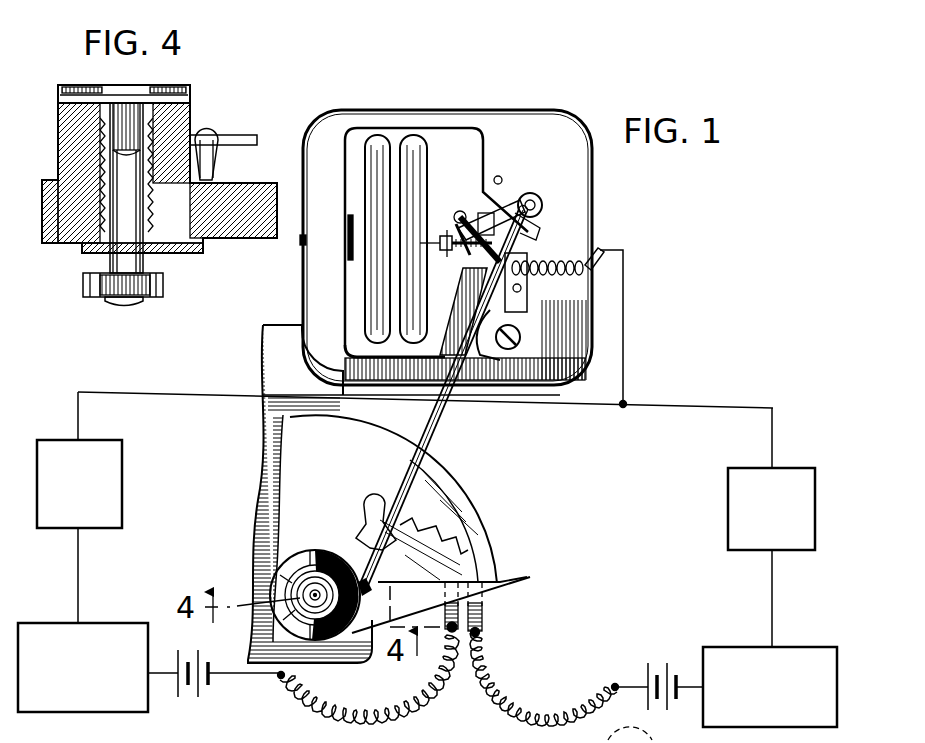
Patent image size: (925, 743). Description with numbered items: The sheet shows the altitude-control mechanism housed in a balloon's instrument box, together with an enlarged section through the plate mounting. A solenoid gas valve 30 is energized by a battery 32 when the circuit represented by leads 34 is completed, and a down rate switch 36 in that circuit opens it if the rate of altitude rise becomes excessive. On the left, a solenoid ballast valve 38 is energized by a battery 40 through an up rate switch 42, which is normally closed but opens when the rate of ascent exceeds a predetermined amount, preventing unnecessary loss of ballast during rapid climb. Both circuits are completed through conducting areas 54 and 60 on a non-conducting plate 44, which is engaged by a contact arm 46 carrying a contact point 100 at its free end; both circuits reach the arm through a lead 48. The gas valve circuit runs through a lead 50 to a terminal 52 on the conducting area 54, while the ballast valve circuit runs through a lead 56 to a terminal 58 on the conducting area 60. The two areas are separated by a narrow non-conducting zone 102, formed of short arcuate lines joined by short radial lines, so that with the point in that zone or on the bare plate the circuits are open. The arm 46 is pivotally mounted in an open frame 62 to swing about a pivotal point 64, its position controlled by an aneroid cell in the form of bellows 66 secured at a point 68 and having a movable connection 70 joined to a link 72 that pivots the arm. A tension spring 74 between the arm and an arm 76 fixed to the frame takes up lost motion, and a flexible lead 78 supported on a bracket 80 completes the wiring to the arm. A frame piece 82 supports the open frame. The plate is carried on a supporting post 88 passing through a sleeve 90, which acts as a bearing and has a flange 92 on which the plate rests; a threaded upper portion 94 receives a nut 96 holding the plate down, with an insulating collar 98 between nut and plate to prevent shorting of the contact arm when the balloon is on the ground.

In FIG. 1, the solenoid gas valve 30 is at (730, 646).
In FIG. 1, the battery 32 is at (650, 663).
In FIG. 1, the leads 34 is at (773, 620).
In FIG. 1, the down rate switch 36 is at (728, 510).
In FIG. 1, the solenoid ballast valve 38 is at (139, 622).
In FIG. 1, the battery 40 is at (197, 655).
In FIG. 1, the up rate switch 42 is at (123, 505).
In FIG. 4, the non-conducting plate 44 is at (279, 140).
In FIG. 1, the non-conducting plate 44 is at (447, 595).
In FIG. 4, the contact arm 46 is at (240, 135).
In FIG. 1, the contact arm 46 is at (437, 430).
In FIG. 1, the lead 48 is at (625, 310).
In FIG. 1, the lead 50 is at (478, 648).
In FIG. 1, the terminal 52 is at (485, 623).
In FIG. 1, the conducting area 54 is at (477, 558).
In FIG. 1, the lead 56 is at (383, 716).
In FIG. 1, the terminal 58 is at (457, 661).
In FIG. 4, the conducting area 60 is at (266, 186).
In FIG. 1, the conducting area 60 is at (375, 536).
In FIG. 1, the frame 62 is at (584, 203).
In FIG. 1, the pivotal point 64 is at (536, 198).
In FIG. 1, the bellows 66 is at (389, 142).
In FIG. 1, the point 68 is at (347, 235).
In FIG. 1, the movable connection 70 is at (437, 232).
In FIG. 1, the link 72 is at (470, 257).
In FIG. 1, the tension spring 74 is at (490, 205).
In FIG. 1, the arm 76 is at (485, 212).
In FIG. 1, the flexible lead 78 is at (554, 263).
In FIG. 1, the bracket 80 is at (600, 250).
In FIG. 1, the frame piece 82 is at (283, 370).
In FIG. 4, the supporting post 88 is at (136, 302).
In FIG. 1, the supporting post 88 is at (299, 551).
In FIG. 4, the sleeve 90 is at (165, 283).
In FIG. 4, the flange 92 is at (200, 248).
In FIG. 4, the threaded upper portion 94 is at (181, 88).
In FIG. 4, the nut 96 is at (192, 110).
In FIG. 4, the insulating collar 98 is at (58, 166).
In FIG. 4, the contact point 100 is at (216, 152).
In FIG. 1, the contact point 100 is at (374, 598).
In FIG. 1, the non-conducting zone 102 is at (460, 513).